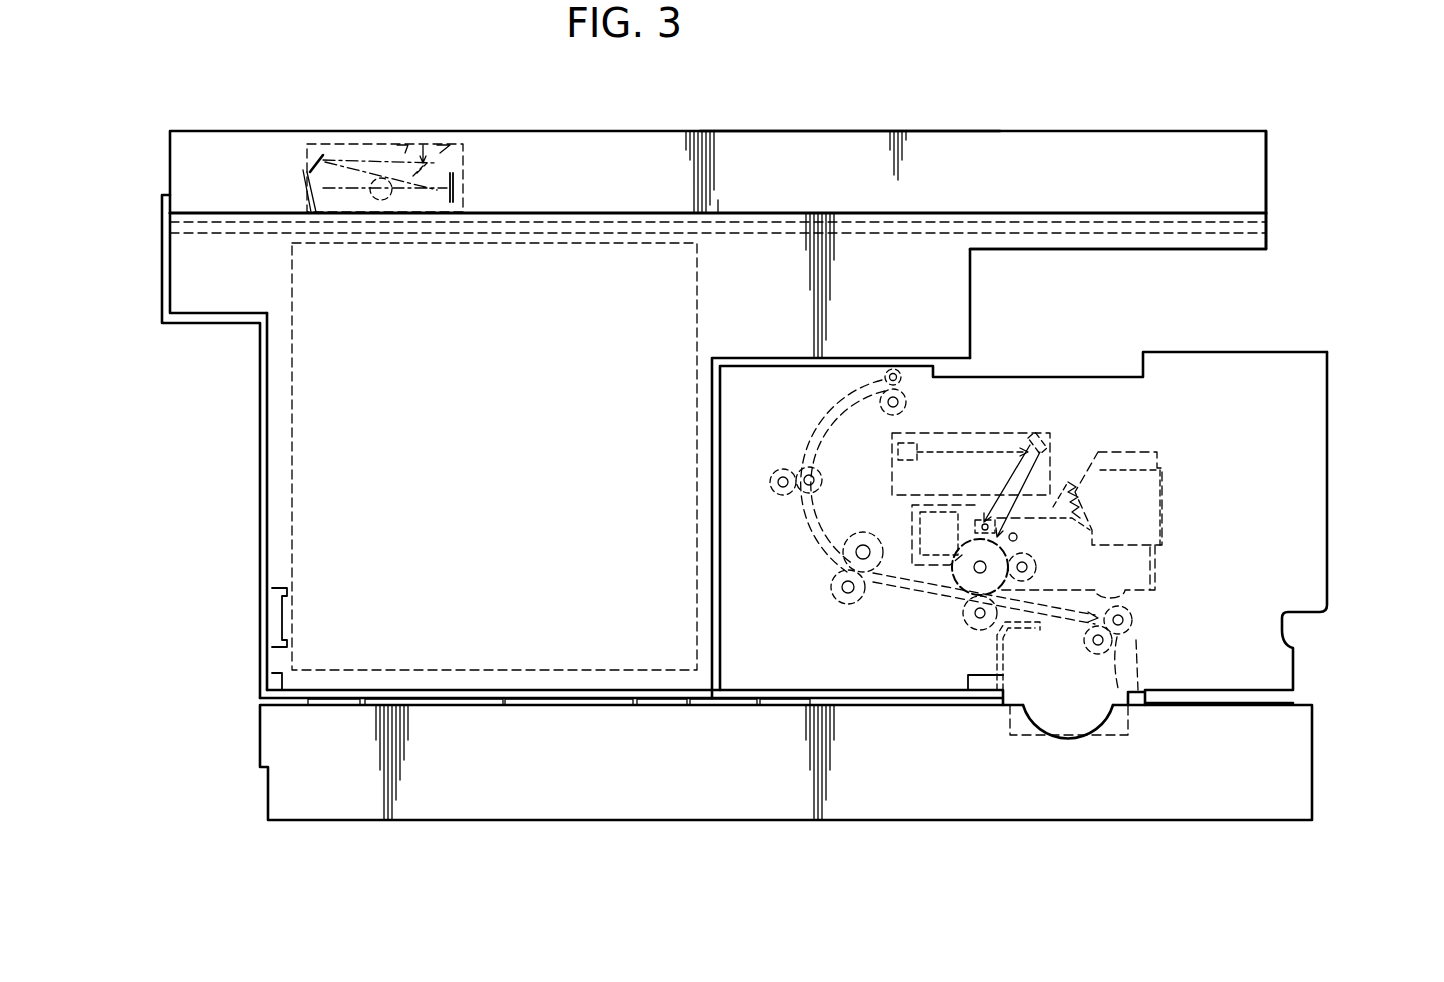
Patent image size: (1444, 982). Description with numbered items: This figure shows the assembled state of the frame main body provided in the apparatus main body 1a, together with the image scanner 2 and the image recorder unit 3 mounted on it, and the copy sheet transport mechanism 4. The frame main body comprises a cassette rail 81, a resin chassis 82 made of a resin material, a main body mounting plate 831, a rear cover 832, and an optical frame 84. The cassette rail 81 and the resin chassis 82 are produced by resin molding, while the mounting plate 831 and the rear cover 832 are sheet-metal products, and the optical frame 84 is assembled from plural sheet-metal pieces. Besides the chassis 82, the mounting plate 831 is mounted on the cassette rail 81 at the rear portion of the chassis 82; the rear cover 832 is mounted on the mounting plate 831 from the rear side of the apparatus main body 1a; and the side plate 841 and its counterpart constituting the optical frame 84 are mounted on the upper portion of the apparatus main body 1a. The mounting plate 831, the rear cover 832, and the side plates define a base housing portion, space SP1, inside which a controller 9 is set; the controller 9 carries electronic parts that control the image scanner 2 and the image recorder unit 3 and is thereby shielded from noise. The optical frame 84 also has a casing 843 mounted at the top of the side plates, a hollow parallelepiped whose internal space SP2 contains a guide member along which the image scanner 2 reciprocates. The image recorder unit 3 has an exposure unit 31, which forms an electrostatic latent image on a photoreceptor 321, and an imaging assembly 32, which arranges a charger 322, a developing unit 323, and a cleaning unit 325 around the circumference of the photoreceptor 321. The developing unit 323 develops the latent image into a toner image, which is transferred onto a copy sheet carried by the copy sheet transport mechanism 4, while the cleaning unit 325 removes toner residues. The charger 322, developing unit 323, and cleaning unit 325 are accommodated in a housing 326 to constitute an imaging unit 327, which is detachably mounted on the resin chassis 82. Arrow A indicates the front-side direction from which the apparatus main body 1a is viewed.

The apparatus main body 1a is at (1412, 109).
The image scanner 2 is at (374, 144).
The image recorder unit 3 is at (1213, 392).
The copy sheet transport mechanism 4 is at (899, 647).
The controller 9 is at (290, 434).
The exposure unit 31 is at (956, 433).
The imaging assembly 32 is at (1145, 602).
The photoreceptor 321 is at (962, 601).
The charger 322 is at (997, 495).
The developing unit 323 is at (1143, 573).
The cleaning unit 325 is at (910, 528).
The housing 326 is at (1160, 452).
The imaging unit 327 is at (1197, 501).
The cassette rail 81 is at (688, 808).
The resin chassis 82 is at (1310, 568).
The main body mounting plate 831 is at (507, 700).
The rear cover 832 is at (260, 520).
The optical frame 84 is at (262, 118).
The side plate 841 is at (955, 311).
The casing 843 is at (813, 131).
The base housing portion SP1 is at (282, 353).
The internal space SP2 is at (1278, 176).
The arrow A is at (1348, 351).